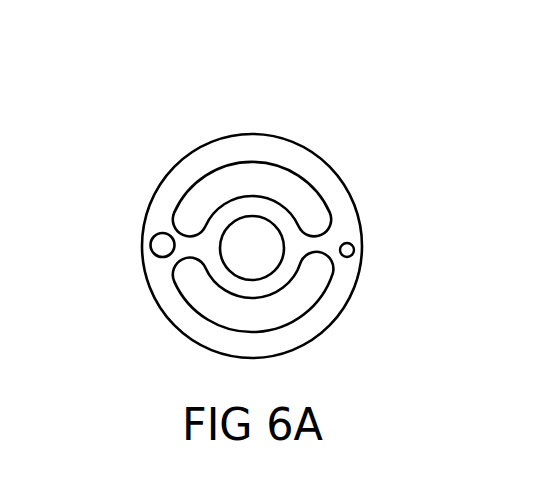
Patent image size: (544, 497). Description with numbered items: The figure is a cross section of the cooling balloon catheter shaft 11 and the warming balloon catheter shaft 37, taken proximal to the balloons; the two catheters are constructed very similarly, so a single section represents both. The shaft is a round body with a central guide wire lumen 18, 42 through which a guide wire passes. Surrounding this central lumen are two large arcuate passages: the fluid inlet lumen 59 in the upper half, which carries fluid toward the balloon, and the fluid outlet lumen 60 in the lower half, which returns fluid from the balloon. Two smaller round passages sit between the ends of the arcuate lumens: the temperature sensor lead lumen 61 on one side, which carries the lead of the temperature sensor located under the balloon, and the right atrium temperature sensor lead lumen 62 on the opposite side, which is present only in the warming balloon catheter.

The cooling balloon catheter shaft 11 is at (340, 246).
The warming balloon catheter shaft 37 is at (340, 246).
The guide wire lumen 18 is at (368, 184).
The guide wire lumen 42 is at (368, 184).
The fluid inlet lumen 59 is at (261, 142).
The fluid outlet lumen 60 is at (321, 312).
The temperature sensor lead lumen 61 is at (119, 306).
The right atrium temperature sensor lead lumen 62 is at (405, 266).